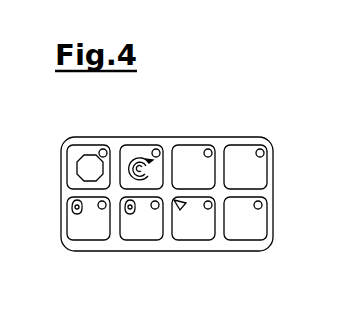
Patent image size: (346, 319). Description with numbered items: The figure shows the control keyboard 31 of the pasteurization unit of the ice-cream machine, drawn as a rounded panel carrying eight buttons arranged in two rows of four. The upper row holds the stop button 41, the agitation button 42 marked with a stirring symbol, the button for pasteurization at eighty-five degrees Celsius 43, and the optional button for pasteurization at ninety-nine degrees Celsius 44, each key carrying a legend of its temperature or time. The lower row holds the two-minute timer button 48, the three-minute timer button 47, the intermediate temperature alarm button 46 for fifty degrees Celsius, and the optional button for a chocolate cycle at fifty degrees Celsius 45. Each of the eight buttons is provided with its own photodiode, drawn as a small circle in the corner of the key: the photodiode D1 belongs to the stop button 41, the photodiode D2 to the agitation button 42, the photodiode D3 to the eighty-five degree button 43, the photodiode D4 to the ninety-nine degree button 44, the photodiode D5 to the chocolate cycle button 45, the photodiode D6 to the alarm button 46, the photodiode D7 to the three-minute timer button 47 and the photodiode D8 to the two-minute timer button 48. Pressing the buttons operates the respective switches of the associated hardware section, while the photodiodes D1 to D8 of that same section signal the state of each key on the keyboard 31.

The keyboard 31 is at (196, 137).
The stop button 41 is at (80, 164).
The agitation button 42 is at (125, 150).
The button for pasteurization at 85° C. 43 is at (185, 152).
The button for pasteurization at 99° C. 44 is at (265, 174).
The button for a chocolate cycle at 50° C. 45 is at (262, 228).
The intermediate temperature alarm button 46 is at (203, 233).
The 3-minute timer button 47 is at (128, 236).
The 2-minute timer button 48 is at (75, 236).
The photodiode D1 is at (103, 149).
The photodiode D2 is at (157, 149).
The photodiode D3 is at (210, 150).
The photodiode D4 is at (262, 150).
The photodiode D5 is at (262, 208).
The photodiode D6 is at (211, 208).
The photodiode D7 is at (155, 209).
The photodiode D8 is at (98, 204).